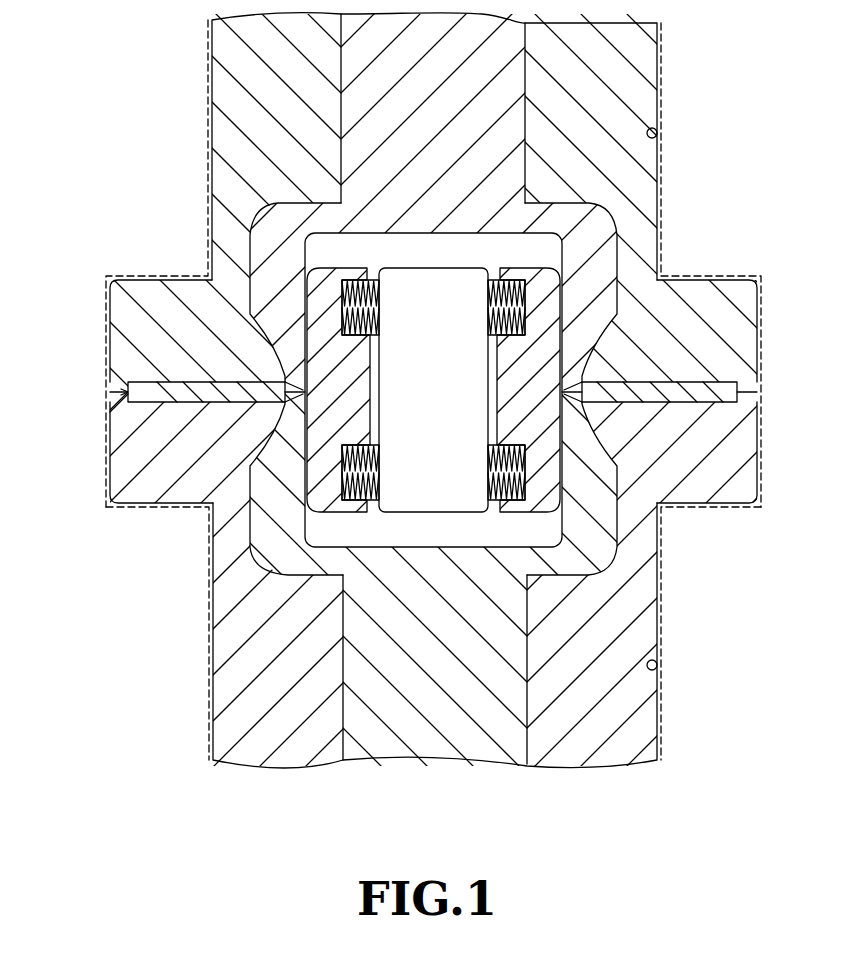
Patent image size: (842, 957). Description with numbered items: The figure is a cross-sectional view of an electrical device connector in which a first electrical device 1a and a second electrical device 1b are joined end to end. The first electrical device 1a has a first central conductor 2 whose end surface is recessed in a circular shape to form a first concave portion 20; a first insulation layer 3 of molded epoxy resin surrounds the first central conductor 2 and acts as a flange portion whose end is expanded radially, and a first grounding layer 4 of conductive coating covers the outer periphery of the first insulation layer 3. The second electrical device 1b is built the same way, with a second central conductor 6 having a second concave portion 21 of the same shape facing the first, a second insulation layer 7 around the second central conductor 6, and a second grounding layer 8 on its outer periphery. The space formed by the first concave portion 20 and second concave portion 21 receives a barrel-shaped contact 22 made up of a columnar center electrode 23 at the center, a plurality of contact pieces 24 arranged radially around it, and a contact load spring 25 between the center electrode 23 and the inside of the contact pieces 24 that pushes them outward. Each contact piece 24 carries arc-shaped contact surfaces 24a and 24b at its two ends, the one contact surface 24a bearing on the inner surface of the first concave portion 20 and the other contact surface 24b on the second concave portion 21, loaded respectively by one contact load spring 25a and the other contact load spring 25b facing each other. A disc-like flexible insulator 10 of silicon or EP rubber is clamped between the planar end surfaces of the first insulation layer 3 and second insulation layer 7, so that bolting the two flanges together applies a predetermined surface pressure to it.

The first electrical device 1a is at (713, 143).
The second electrical device 1b is at (713, 633).
The first central conductor 2 is at (525, 88).
The first insulation layer 3 is at (657, 131).
The first grounding layer 4 is at (657, 172).
The second central conductor 6 is at (527, 633).
The second insulation layer 7 is at (657, 663).
The second grounding layer 8 is at (657, 690).
The flexible insulator 10 is at (722, 378).
The first concave portion 20 is at (548, 228).
The second concave portion 21 is at (600, 557).
The barrel-shaped contact 22 is at (543, 266).
The center electrode 23 is at (390, 268).
The contact piece 24 is at (50, 345).
The one contact surface 24a is at (305, 347).
The other contact surface 24b is at (305, 432).
The contact load spring 25 is at (500, 276).
The one contact load spring 25a is at (365, 280).
The other contact load spring 25b is at (370, 508).